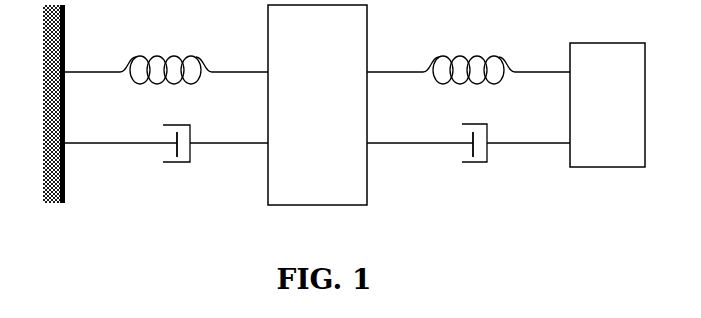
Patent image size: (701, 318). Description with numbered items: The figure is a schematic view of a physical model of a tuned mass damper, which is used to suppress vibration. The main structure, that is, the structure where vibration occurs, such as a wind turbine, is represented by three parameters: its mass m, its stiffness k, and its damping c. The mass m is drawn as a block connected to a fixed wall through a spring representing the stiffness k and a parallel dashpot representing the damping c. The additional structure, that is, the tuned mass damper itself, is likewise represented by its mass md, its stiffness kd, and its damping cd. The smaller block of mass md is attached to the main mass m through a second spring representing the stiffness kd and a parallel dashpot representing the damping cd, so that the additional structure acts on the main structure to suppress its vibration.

The stiffness of the main structure k is at (166, 51).
The damping of the main structure c is at (166, 161).
The mass of the main structure m is at (317, 105).
The stiffness of the additional structure kd is at (468, 50).
The damping of the additional structure cd is at (468, 161).
The mass of the additional structure md is at (607, 105).